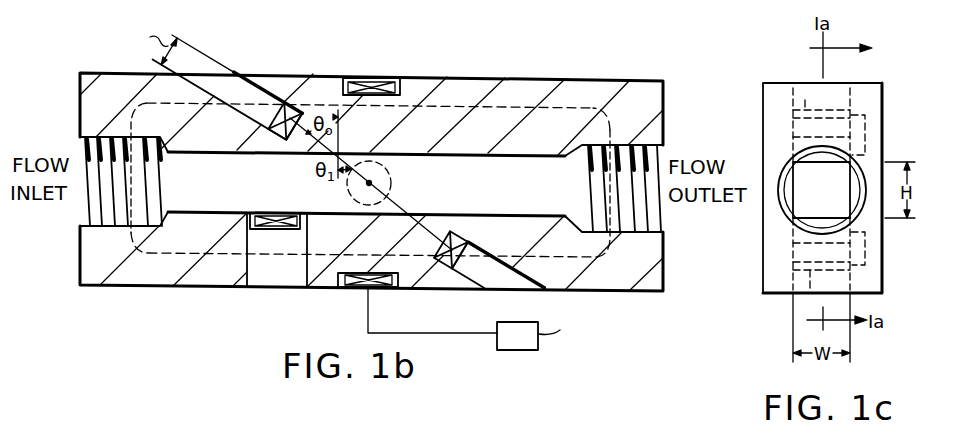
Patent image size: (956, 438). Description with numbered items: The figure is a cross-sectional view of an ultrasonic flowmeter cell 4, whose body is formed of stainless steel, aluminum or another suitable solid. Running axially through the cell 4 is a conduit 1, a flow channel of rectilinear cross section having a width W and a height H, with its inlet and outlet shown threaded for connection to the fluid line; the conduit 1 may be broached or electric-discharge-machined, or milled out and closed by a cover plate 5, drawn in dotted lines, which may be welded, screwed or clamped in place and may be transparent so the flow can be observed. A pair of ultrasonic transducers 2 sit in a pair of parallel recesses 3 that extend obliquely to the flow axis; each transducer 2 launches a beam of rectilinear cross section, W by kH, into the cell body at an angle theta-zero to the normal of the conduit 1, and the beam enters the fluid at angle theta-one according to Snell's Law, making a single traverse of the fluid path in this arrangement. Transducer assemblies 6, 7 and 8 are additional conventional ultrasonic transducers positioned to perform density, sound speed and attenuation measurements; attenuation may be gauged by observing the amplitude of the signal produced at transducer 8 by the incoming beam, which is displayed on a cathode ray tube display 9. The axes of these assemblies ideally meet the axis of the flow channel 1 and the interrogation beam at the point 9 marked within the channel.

In FIG. 1b, the conduit 1 is at (522, 185).
In FIG. 1b, the ultrasonic transducer 2 is at (282, 107).
In FIG. 1c, the ultrasonic transducer 2 is at (805, 92).
In FIG. 1b, the recess 3 is at (251, 84).
In FIG. 1b, the cell 4 is at (460, 78).
In FIG. 1c, the cell 4 is at (762, 115).
In FIG. 1b, the cover plate 5 is at (567, 106).
In FIG. 1c, the cover plate 5 is at (866, 140).
In FIG. 1b, the transducer assembly 6 is at (370, 78).
In FIG. 1b, the transducer assembly 7 is at (276, 232).
In FIG. 1b, the transducer assembly 8 is at (363, 291).
In FIG. 1b, the cathode ray tube display 9 is at (372, 183).